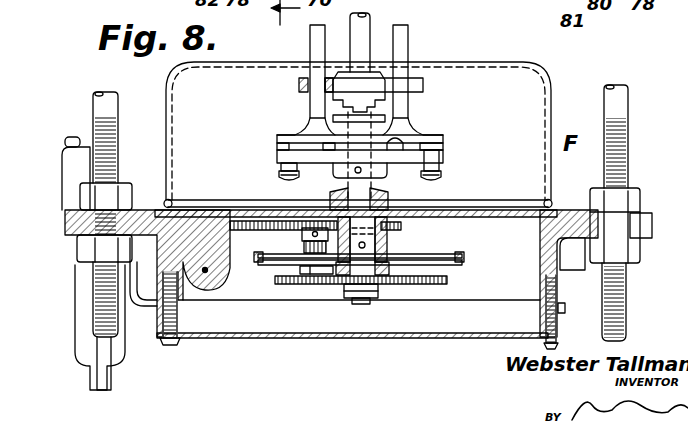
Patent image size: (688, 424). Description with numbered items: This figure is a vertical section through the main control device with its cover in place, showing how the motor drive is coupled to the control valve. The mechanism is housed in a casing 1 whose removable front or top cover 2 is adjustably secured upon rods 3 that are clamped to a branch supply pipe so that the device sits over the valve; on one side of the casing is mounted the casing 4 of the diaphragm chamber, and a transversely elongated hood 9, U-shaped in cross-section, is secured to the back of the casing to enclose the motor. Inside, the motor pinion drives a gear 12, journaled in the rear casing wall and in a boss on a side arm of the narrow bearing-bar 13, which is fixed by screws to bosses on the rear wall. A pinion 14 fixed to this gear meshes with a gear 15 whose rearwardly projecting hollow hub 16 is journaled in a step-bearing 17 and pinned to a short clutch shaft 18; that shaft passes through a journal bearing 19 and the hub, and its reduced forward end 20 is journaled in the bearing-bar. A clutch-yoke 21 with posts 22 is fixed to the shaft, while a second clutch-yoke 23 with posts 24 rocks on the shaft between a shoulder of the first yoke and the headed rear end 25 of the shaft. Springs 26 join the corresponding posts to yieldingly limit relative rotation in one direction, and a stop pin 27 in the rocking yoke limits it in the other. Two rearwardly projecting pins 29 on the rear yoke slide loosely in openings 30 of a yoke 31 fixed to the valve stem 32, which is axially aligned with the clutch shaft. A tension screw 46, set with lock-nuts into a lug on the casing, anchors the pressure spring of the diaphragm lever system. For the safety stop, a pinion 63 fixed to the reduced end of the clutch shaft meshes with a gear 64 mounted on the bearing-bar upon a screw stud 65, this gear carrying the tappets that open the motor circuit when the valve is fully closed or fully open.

The casing 1 is at (559, 268).
The front or top cover 2 is at (368, 338).
The rods 3 is at (107, 110).
The casing of diaphragm chamber 4 is at (83, 299).
The hood 9 is at (553, 93).
The gear 12 is at (243, 231).
The bearing-bar 13 is at (441, 267).
The pinion 14 is at (307, 248).
The gear 15 is at (261, 258).
The hollow hub 16 is at (388, 246).
The step-bearing 17 is at (338, 197).
The clutch shaft 18 is at (360, 186).
The journal bearing 19 is at (388, 198).
The reduced forward end 20 is at (358, 285).
The clutch-yoke 21 is at (441, 148).
The posts 22 is at (281, 170).
The second clutch-yoke 23 is at (420, 138).
The posts 24 is at (279, 148).
The headed rear end 25 is at (373, 113).
The springs 26 is at (282, 180).
The stop pin 27 is at (303, 138).
The pins 29 is at (320, 47).
The openings 30 is at (300, 79).
The yoke 31 is at (380, 88).
The valve stem 32 is at (363, 30).
The tension screw 46 is at (205, 274).
The pinion 63 is at (356, 298).
The gear 64 is at (414, 285).
The screw stud 65 is at (362, 304).